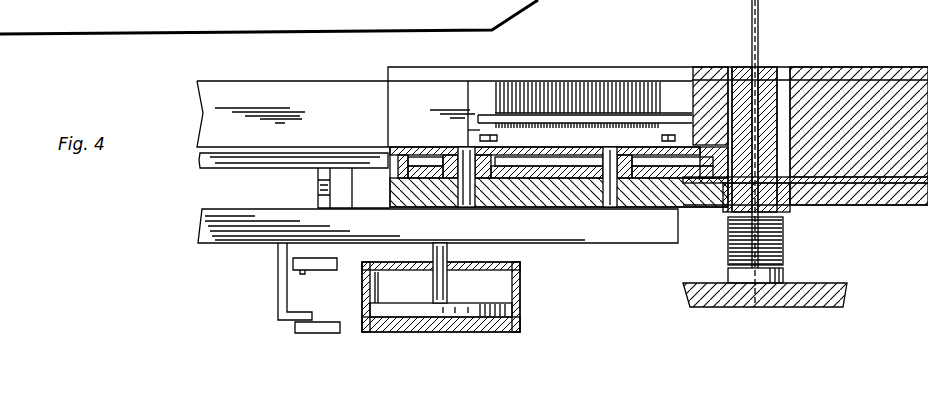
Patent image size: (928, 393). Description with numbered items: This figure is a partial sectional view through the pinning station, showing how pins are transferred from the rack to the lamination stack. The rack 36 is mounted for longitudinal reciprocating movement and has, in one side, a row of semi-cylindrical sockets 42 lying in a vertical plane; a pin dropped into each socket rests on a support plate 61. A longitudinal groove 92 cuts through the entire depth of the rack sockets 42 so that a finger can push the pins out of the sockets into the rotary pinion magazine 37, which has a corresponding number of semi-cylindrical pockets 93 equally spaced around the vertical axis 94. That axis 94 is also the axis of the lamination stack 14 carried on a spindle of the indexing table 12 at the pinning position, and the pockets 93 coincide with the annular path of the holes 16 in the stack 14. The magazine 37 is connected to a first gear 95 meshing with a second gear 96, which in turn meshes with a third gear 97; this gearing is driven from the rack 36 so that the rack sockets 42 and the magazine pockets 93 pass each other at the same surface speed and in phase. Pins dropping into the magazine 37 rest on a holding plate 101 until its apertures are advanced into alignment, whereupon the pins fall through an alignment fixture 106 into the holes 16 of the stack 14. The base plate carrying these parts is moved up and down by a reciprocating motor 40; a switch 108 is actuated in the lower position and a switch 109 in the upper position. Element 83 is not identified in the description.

The rack 36 is at (430, 93).
The semi-cylindrical sockets 42 is at (558, 80).
The wire 83 is at (470, 137).
The longitudinal groove 92 is at (486, 121).
The support plate 61 is at (411, 152).
The axis 94 is at (759, 12).
The semi-cylindrical pockets 93 is at (770, 92).
The rotary pinion magazine 37 is at (795, 85).
The third gear 97 is at (504, 168).
The second gear 96 is at (563, 170).
The alignment fixture 106 is at (724, 196).
The holes 16 is at (730, 247).
The lamination stack 14 is at (784, 252).
The first gear 95 is at (812, 183).
The holding plate 101 is at (885, 183).
The indexing table 12 is at (848, 300).
The switch 109 is at (330, 271).
The switch 108 is at (298, 329).
The reciprocating motor 40 is at (521, 292).